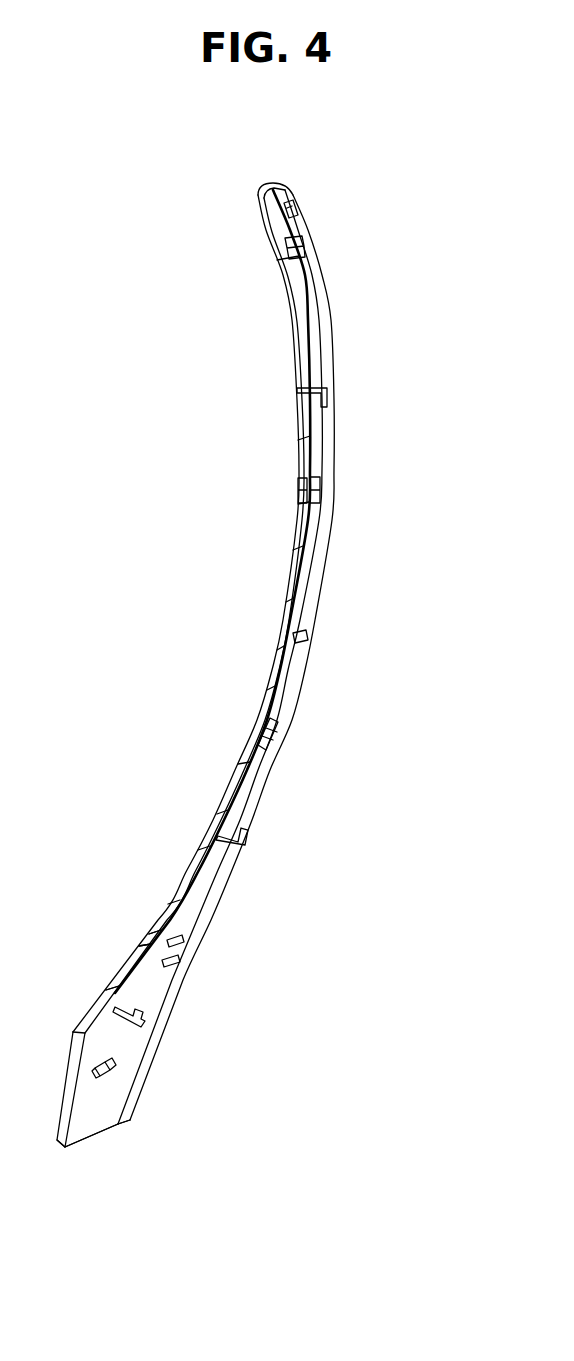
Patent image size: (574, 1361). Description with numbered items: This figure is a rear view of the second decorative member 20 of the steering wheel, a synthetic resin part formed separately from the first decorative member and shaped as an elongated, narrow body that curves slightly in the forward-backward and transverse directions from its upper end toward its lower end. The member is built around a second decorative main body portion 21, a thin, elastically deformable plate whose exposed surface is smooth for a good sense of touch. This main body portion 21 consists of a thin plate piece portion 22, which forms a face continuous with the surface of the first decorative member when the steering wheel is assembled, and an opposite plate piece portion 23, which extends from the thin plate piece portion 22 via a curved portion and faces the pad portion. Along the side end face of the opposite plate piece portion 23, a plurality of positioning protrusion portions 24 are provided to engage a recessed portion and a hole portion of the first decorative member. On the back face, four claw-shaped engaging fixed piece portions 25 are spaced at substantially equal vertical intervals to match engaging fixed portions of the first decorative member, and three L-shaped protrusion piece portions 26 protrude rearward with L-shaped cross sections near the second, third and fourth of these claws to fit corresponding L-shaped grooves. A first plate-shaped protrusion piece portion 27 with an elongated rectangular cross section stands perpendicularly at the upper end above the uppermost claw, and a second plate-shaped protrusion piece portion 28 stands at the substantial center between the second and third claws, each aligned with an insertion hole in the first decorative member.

The second decorative member 20 is at (243, 173).
The second decorative main body portion 21 is at (128, 1208).
The thin plate piece portion 22 is at (122, 1123).
The opposite plate piece portion 23 is at (85, 1123).
The positioning protrusion portions 24 is at (118, 970).
The engaging fixed piece portion 25 is at (304, 248).
The L-shaped protrusion piece portion 26 is at (328, 390).
The first plate-shaped protrusion piece portion 27 is at (298, 208).
The second plate-shaped protrusion piece portion 28 is at (308, 636).